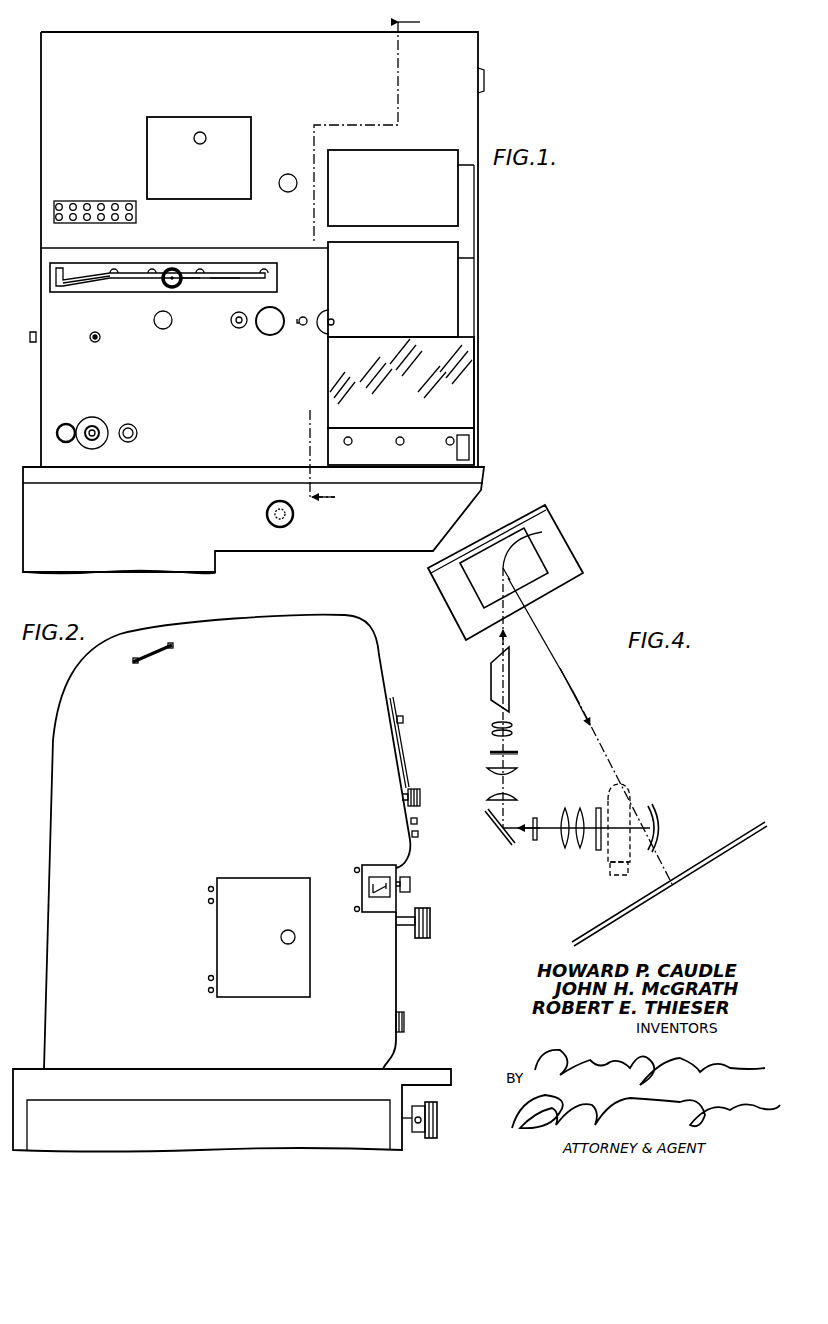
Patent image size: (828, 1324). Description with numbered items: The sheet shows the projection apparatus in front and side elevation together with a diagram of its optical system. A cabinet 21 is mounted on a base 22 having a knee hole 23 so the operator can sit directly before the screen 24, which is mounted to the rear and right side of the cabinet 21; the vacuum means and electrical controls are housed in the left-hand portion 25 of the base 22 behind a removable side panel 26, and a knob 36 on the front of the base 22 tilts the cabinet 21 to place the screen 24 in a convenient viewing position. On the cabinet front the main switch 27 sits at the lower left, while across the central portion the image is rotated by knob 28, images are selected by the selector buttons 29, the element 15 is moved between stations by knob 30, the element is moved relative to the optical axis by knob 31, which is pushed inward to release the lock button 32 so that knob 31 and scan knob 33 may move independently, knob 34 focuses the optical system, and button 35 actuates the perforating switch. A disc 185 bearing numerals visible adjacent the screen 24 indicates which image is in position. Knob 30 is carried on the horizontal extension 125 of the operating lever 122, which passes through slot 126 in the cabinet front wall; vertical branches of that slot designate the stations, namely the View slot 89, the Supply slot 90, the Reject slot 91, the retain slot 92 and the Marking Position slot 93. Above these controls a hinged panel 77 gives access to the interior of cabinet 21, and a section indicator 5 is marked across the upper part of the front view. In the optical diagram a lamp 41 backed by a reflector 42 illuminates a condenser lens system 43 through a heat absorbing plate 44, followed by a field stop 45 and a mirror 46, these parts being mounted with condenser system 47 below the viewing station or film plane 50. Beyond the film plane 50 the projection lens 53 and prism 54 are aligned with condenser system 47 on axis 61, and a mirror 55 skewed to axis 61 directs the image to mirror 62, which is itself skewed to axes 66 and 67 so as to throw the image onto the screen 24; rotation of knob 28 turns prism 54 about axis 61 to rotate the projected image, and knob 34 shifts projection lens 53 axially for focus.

In FIG. 1, the section line 5 is at (373, 260).
In FIG. 4, the element 15 is at (497, 751).
In FIG. 1, the cabinet 21 is at (468, 48).
In FIG. 2, the cabinet 21 is at (72, 733).
In FIG. 1, the base 22 is at (253, 519).
In FIG. 2, the base 22 is at (232, 1110).
In FIG. 1, the knee hole 23 is at (216, 562).
In FIG. 1, the screen 24 is at (460, 413).
In FIG. 4, the screen 24 is at (735, 838).
In FIG. 1, the left-hand portion 25 is at (130, 566).
In FIG. 2, the removable side panel 26 is at (208, 1125).
In FIG. 1, the main switch 27 is at (97, 428).
In FIG. 1, the knob 28 is at (290, 192).
In FIG. 2, the knob 28 is at (414, 789).
In FIG. 1, the selector buttons 29 is at (68, 200).
In FIG. 2, the selector buttons 29 is at (420, 823).
In FIG. 1, the knob 30 is at (172, 268).
In FIG. 2, the knob 30 is at (412, 884).
In FIG. 1, the knob 31 is at (266, 336).
In FIG. 2, the knob 31 is at (432, 924).
In FIG. 1, the lock button 32 is at (302, 327).
In FIG. 1, the scan knob 33 is at (236, 329).
In FIG. 1, the knob 34 is at (161, 330).
In FIG. 1, the button 35 is at (94, 343).
In FIG. 1, the knob 36 is at (266, 513).
In FIG. 2, the knob 36 is at (437, 1114).
In FIG. 4, the lamp 41 is at (610, 862).
In FIG. 4, the reflector 42 is at (655, 810).
In FIG. 4, the condenser lens system 43 is at (566, 808).
In FIG. 4, the heat absorbing plate 44 is at (598, 808).
In FIG. 4, the field stop 45 is at (535, 842).
In FIG. 4, the mirror 46 is at (497, 830).
In FIG. 4, the condenser system 47 is at (517, 795).
In FIG. 4, the viewing station or film plane 50 is at (497, 756).
In FIG. 4, the projection lens 53 is at (514, 728).
In FIG. 4, the prism 54 is at (510, 692).
In FIG. 4, the mirror 55 is at (520, 572).
In FIG. 4, the axis 61 is at (497, 645).
In FIG. 4, the mirror 62 is at (560, 560).
In FIG. 4, the axis 66 is at (552, 536).
In FIG. 4, the axis 67 is at (566, 668).
In FIG. 1, the hinged panel 77 is at (190, 128).
In FIG. 2, the hinged panel 77 is at (399, 708).
In FIG. 1, the slot 89 is at (268, 274).
In FIG. 1, the slot 90 is at (192, 266).
In FIG. 1, the slot 91 is at (150, 282).
In FIG. 1, the slot 92 is at (119, 268).
In FIG. 1, the slot 93 is at (56, 280).
In FIG. 2, the slot 93 is at (362, 887).
In FIG. 1, the operating lever 122 is at (205, 275).
In FIG. 1, the horizontal extension 125 is at (183, 284).
In FIG. 1, the slot 126 is at (226, 282).
In FIG. 1, the disc 185 is at (335, 312).